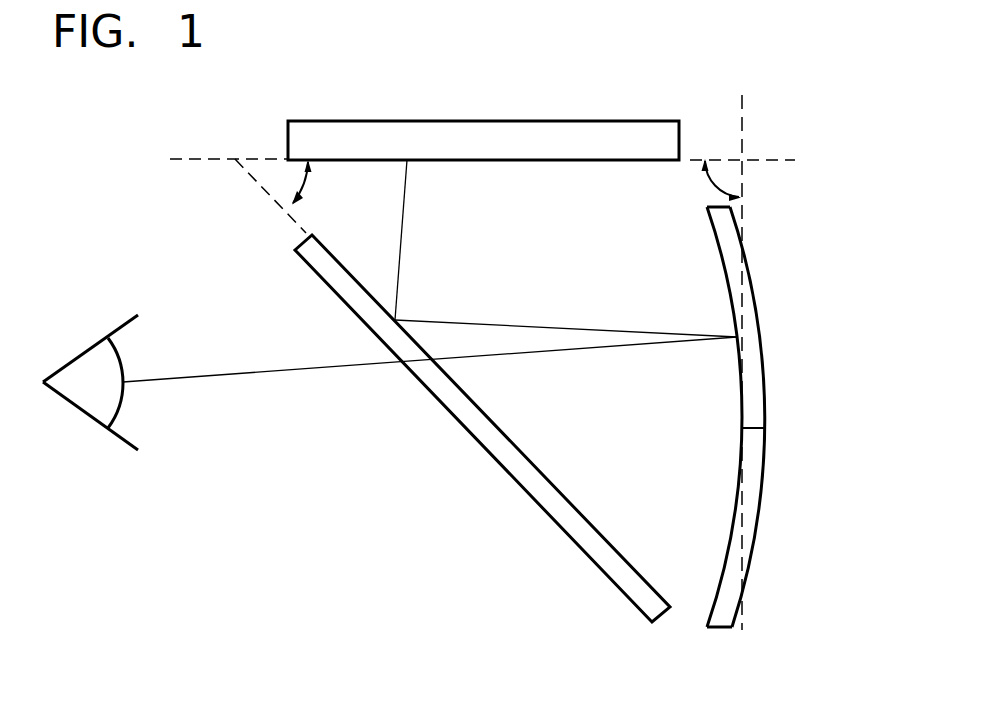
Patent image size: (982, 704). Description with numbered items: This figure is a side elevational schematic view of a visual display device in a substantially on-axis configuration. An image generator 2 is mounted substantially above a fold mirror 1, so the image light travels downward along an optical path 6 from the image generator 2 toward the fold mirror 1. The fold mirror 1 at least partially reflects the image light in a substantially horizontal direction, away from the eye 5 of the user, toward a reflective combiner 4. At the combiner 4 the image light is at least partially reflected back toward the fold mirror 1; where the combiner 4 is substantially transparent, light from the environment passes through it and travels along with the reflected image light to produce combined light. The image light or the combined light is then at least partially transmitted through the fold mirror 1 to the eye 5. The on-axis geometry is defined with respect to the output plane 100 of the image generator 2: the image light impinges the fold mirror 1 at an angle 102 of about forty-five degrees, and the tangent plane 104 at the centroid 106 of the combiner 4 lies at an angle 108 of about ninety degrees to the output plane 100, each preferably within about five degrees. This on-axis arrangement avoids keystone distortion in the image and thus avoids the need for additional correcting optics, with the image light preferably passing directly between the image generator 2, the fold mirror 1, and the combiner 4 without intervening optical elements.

The fold mirror 1 is at (467, 429).
The image generator 2 is at (289, 136).
The reflective combiner 4 is at (766, 380).
The eye 5 is at (85, 412).
The optical path 6 is at (402, 239).
The output plane 100 is at (218, 160).
The angle 102 is at (304, 184).
The tangent plane 104 is at (744, 182).
The centroid 106 is at (765, 430).
The angle 108 is at (708, 187).